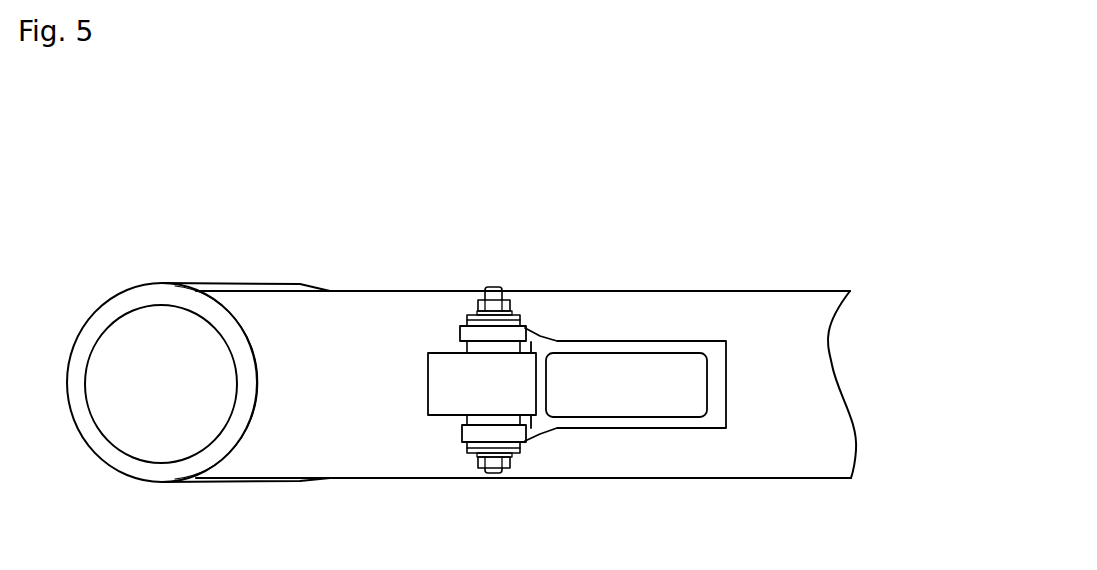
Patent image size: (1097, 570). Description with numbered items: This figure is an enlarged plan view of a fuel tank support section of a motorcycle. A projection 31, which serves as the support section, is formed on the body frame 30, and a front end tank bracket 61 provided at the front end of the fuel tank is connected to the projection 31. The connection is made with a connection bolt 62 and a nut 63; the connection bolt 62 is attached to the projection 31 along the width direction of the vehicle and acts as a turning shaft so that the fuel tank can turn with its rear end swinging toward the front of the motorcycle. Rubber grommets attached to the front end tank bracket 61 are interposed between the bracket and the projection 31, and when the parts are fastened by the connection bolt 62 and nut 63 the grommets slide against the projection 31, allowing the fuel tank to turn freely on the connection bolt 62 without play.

The body frame 30 is at (381, 282).
The projection 31 is at (451, 370).
The front end tank bracket 61 is at (662, 345).
The connection bolt 62 is at (491, 473).
The nut 63 is at (504, 303).